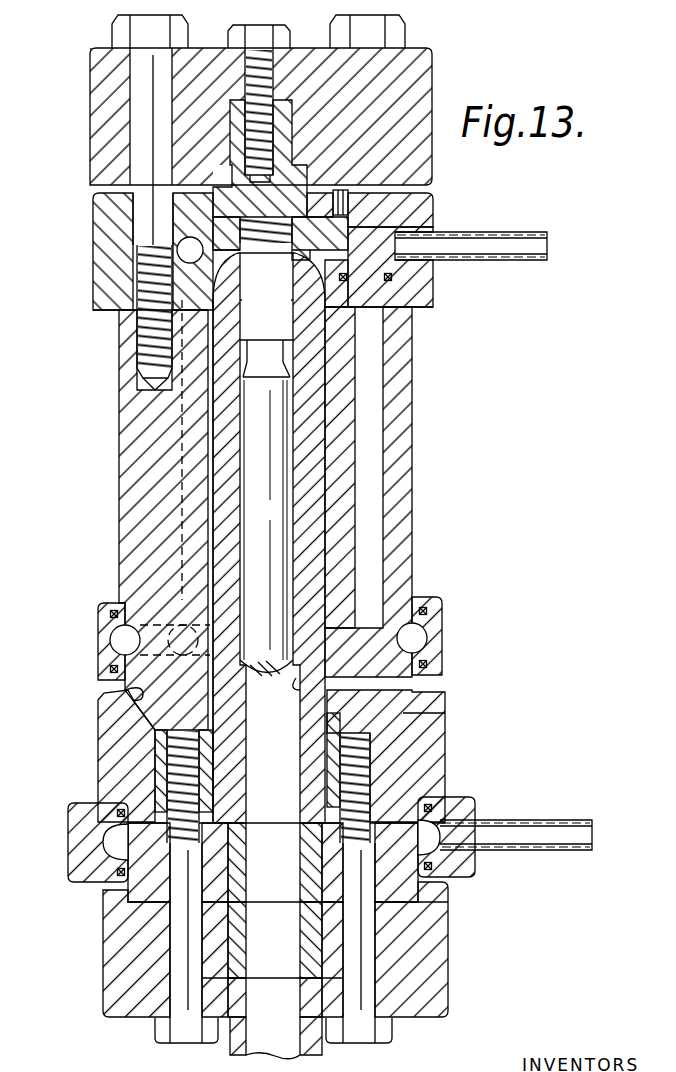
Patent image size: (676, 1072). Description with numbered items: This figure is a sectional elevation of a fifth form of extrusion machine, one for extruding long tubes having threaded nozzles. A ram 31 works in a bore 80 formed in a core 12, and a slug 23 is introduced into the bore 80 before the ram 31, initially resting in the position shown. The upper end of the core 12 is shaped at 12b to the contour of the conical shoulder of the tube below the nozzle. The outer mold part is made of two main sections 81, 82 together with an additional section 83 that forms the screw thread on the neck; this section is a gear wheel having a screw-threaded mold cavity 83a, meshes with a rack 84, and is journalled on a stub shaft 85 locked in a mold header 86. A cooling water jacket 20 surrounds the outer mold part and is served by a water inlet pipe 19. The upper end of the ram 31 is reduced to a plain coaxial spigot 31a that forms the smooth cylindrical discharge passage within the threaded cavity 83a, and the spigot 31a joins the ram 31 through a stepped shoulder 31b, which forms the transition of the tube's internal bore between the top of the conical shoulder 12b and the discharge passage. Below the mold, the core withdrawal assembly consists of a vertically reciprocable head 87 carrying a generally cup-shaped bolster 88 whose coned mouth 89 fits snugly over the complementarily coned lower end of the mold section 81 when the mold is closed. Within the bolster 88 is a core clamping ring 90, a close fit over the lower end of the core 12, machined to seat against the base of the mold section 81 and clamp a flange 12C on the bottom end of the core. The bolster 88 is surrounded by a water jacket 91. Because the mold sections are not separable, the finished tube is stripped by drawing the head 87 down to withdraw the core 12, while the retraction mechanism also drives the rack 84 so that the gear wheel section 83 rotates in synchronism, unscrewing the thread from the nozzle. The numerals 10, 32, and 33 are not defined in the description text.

The mold header 86 is at (93, 78).
The stub shaft 85 is at (293, 128).
The main section of outer mold part 82 is at (100, 203).
The rack 84 is at (398, 180).
The seat block 33 is at (405, 222).
The gear wheel mold section 83 is at (238, 222).
The screw-threaded mold cavity 83a is at (235, 230).
The water inlet pipe 19 is at (490, 232).
The conical shoulder of the core 12b is at (205, 293).
The main section of outer mold part 81 is at (119, 455).
The cylinder liner 10 is at (208, 405).
The core 12 is at (317, 500).
The valve seat 32 is at (268, 256).
The slug 23 is at (278, 328).
The spigot 31a is at (275, 352).
The stepped shoulder 31b is at (240, 372).
The ram 31 is at (275, 420).
The cooling water jacket 20 is at (188, 250).
The cup-shaped bolster 88 is at (105, 745).
The coned mouth 89 is at (125, 692).
The bore 80 is at (410, 713).
The core clamping ring 90 is at (167, 777).
The flange 12C is at (378, 805).
The water jacket 91 is at (70, 840).
The vertically reciprocable head 87 is at (118, 935).